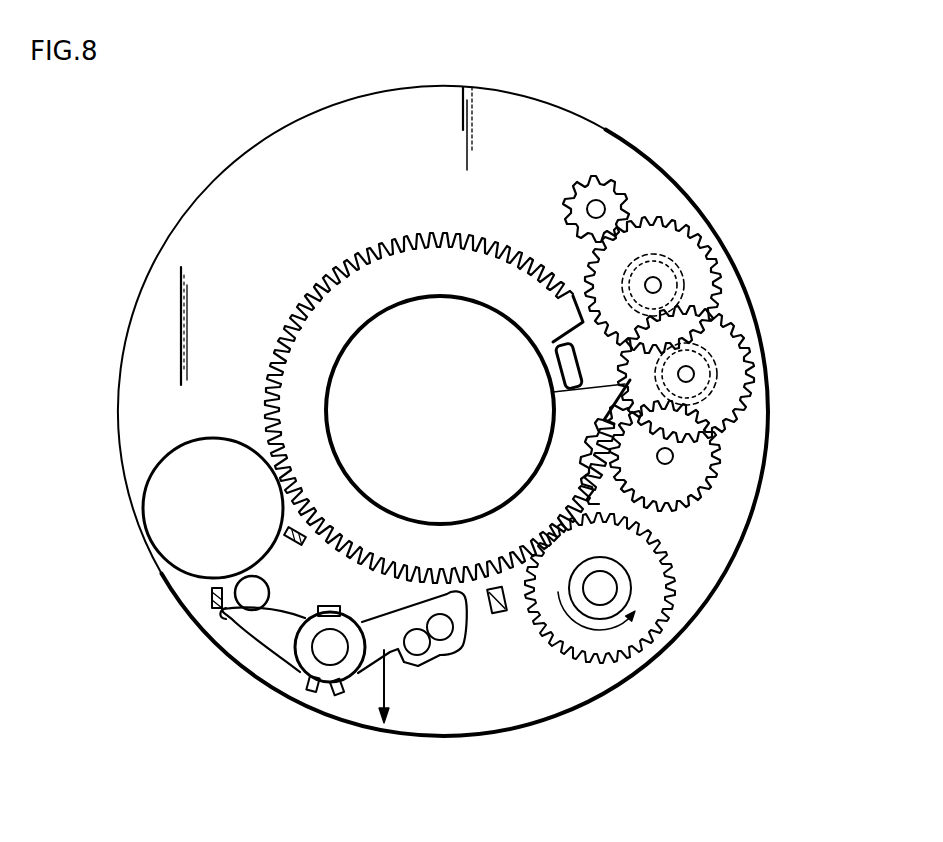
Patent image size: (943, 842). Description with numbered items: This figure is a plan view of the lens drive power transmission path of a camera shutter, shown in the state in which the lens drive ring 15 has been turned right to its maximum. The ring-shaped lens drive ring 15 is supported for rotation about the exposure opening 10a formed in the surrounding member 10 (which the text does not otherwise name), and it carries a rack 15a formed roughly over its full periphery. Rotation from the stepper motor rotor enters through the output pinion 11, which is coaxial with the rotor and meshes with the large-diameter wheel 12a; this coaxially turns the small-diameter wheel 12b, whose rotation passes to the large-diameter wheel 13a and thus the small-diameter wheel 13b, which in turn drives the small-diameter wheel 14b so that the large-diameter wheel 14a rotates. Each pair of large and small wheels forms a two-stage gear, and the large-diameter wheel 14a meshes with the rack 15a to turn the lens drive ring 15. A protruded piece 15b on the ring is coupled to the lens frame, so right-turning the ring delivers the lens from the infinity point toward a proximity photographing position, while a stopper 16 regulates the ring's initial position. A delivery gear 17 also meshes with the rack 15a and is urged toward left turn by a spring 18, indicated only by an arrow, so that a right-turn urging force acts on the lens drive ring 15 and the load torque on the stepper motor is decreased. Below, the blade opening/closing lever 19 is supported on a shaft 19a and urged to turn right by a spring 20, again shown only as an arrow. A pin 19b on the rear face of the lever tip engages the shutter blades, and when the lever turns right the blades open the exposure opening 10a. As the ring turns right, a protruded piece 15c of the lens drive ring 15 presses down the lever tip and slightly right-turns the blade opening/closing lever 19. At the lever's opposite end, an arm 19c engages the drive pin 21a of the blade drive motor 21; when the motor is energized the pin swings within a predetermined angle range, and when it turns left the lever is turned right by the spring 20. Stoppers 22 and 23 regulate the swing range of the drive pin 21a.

The base plate 10 is at (266, 137).
The exposure opening 10a is at (330, 398).
The output pinion 11 is at (570, 193).
The large-diameter wheel 12a is at (685, 222).
The small-diameter wheel 12b is at (718, 258).
The large-diameter wheel 13a is at (755, 340).
The small-diameter wheel 13b is at (717, 383).
The large-diameter wheel 14a is at (712, 476).
The small-diameter wheel 14b is at (712, 476).
The lens drive ring 15 is at (299, 286).
The rack 15a is at (270, 358).
The protruded piece 15b is at (557, 362).
The protruded piece 15c is at (590, 387).
The stopper 16 is at (502, 614).
The delivery gear 17 is at (668, 613).
The spring 18 is at (668, 568).
The blade opening/closing lever 19 is at (270, 645).
The shaft 19a is at (322, 672).
The pin 19b is at (452, 652).
The arm 19c is at (233, 645).
The spring 20 is at (380, 697).
The blade drive motor 21 is at (178, 445).
The drive pin 21a is at (247, 582).
The stopper 22 is at (210, 596).
The stopper 23 is at (294, 548).